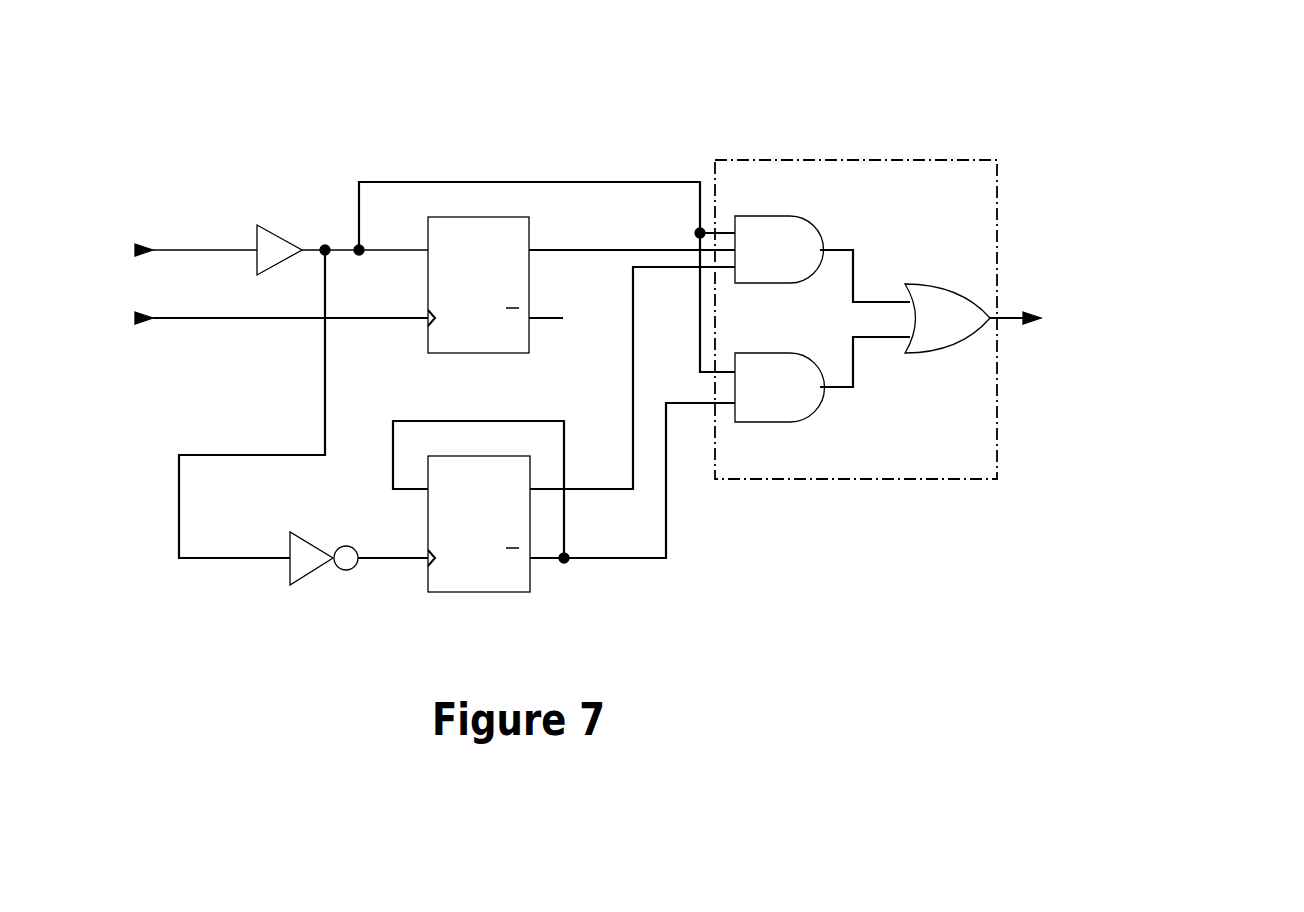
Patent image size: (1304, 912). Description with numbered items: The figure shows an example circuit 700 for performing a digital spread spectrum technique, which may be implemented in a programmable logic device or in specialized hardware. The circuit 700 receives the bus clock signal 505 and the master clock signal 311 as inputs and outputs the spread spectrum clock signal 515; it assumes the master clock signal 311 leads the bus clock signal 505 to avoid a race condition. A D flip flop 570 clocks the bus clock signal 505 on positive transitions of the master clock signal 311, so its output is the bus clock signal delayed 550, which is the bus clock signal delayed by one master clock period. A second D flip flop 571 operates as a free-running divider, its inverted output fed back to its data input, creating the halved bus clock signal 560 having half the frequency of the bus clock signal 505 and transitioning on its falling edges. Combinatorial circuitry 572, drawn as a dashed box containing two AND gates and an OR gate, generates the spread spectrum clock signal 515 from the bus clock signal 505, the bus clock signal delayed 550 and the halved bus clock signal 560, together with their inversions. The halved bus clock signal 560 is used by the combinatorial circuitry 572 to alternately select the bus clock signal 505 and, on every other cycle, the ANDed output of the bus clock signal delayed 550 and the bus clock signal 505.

The example circuit 700 is at (474, 52).
The bus clock signal 505 is at (245, 245).
The master clock signal 311 is at (244, 417).
The D flip flop 570 is at (488, 226).
The bus clock signal delayed 550 is at (612, 202).
The bus clock signal/2 560 is at (610, 387).
The D flip flop 571 is at (490, 467).
The combinatorial circuitry 572 is at (866, 160).
The spread spectrum clock signal 515 is at (1124, 309).